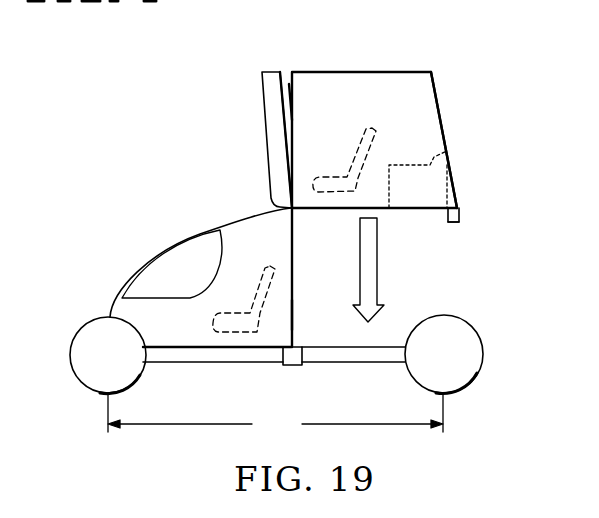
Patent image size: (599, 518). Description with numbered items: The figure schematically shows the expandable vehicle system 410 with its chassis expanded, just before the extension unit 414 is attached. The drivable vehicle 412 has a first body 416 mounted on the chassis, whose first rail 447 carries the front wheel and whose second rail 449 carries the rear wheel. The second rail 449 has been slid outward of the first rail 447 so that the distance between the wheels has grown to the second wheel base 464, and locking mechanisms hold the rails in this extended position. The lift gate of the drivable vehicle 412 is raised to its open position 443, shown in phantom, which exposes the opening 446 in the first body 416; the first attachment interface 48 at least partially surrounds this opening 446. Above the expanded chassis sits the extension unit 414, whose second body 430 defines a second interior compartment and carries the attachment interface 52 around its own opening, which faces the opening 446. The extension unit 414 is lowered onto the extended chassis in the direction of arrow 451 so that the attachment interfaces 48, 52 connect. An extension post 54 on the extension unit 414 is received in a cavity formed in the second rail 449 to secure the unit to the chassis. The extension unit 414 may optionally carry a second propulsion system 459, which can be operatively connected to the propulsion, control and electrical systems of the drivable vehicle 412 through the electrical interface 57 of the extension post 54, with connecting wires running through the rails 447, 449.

The expandable vehicle system 410 is at (148, 172).
The drivable vehicle 412 is at (122, 272).
The extension unit 414 is at (441, 101).
The first body 416 is at (190, 237).
The second body 430 is at (383, 71).
The open position 443 is at (262, 134).
The opening 446 is at (294, 316).
The first rail 447 is at (232, 363).
The second rail 449 is at (345, 363).
The arrow 451 is at (378, 290).
The second propulsion system 459 is at (447, 151).
The second wheel base 464 is at (275, 413).
The first attachment interface 48 is at (293, 262).
The attachment interface 52 is at (289, 86).
The extension post 54 is at (461, 215).
The electrical interface 57 is at (452, 223).